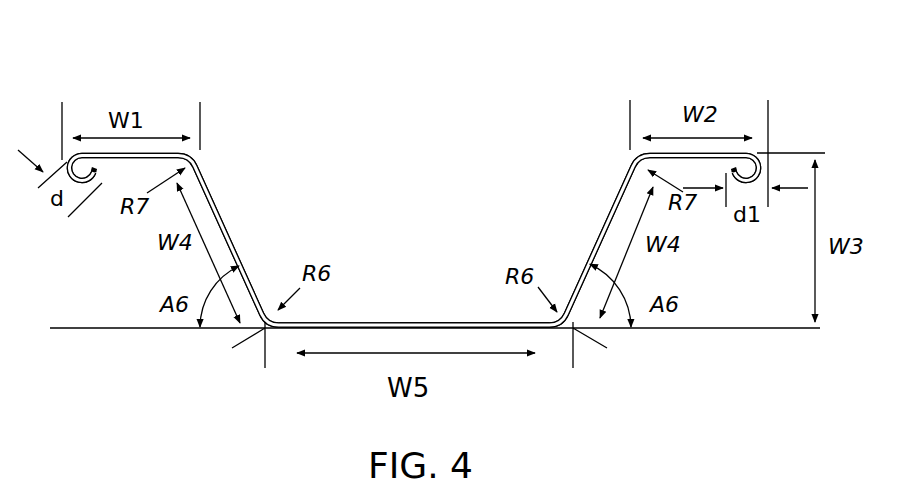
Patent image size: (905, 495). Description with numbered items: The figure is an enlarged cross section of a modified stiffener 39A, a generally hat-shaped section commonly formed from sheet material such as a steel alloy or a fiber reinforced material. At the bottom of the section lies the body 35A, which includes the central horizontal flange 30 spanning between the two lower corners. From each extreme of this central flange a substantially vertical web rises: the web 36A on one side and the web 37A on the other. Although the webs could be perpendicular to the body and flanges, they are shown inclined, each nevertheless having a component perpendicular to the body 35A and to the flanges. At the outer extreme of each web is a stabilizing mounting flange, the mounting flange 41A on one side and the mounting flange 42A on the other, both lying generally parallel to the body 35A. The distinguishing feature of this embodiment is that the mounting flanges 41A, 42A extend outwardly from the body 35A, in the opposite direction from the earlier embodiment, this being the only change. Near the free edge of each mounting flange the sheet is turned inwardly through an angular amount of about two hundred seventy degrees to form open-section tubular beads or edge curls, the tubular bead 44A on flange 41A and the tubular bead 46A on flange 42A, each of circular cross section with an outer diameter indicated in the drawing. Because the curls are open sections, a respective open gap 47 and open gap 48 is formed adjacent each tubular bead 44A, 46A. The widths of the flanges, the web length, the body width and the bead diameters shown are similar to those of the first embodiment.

The central horizontal flange 30 is at (427, 323).
The body 35A is at (488, 320).
The web 36A is at (235, 222).
The web 37A is at (607, 212).
The stiffener 39A is at (368, 310).
The mounting flange 41A is at (155, 150).
The mounting flange 42A is at (725, 152).
The tubular bead 44A is at (82, 212).
The tubular bead 46A is at (757, 203).
The open gap 47 is at (102, 162).
The open gap 48 is at (730, 167).